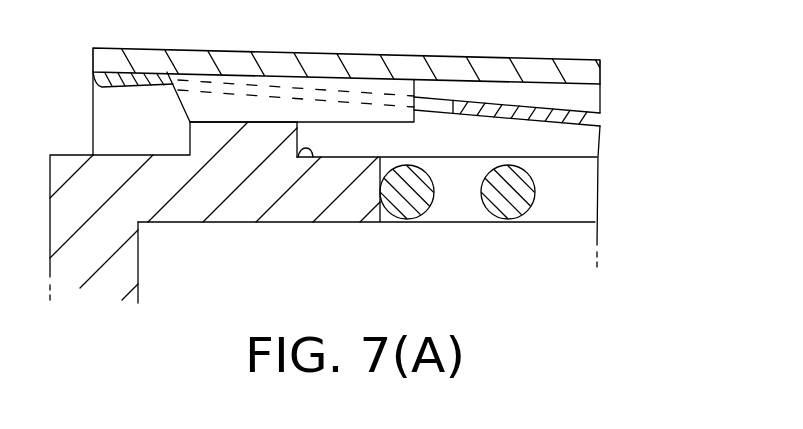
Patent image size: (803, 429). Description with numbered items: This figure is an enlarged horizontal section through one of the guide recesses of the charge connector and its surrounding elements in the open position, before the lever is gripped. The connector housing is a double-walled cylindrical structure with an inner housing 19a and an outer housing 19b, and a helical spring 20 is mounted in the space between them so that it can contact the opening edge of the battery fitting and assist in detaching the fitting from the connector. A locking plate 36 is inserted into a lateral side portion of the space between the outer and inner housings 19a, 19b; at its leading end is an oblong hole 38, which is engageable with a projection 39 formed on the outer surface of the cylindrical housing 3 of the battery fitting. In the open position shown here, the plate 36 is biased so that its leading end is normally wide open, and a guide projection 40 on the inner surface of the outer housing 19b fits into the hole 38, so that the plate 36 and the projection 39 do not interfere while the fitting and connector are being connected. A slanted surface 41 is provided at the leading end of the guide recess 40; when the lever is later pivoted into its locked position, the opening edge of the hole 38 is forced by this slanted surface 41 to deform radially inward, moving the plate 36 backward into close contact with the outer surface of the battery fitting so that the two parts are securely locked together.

The cylindrical housing 3 is at (127, 273).
The inner housing 19a is at (557, 227).
The outer housing 19b is at (524, 59).
The helical spring 20 is at (413, 207).
The locking plate 36 is at (560, 109).
The oblong hole 38 is at (432, 103).
The projection 39 is at (312, 158).
The guide projection 40 is at (223, 110).
The slanted surface 41 is at (187, 115).